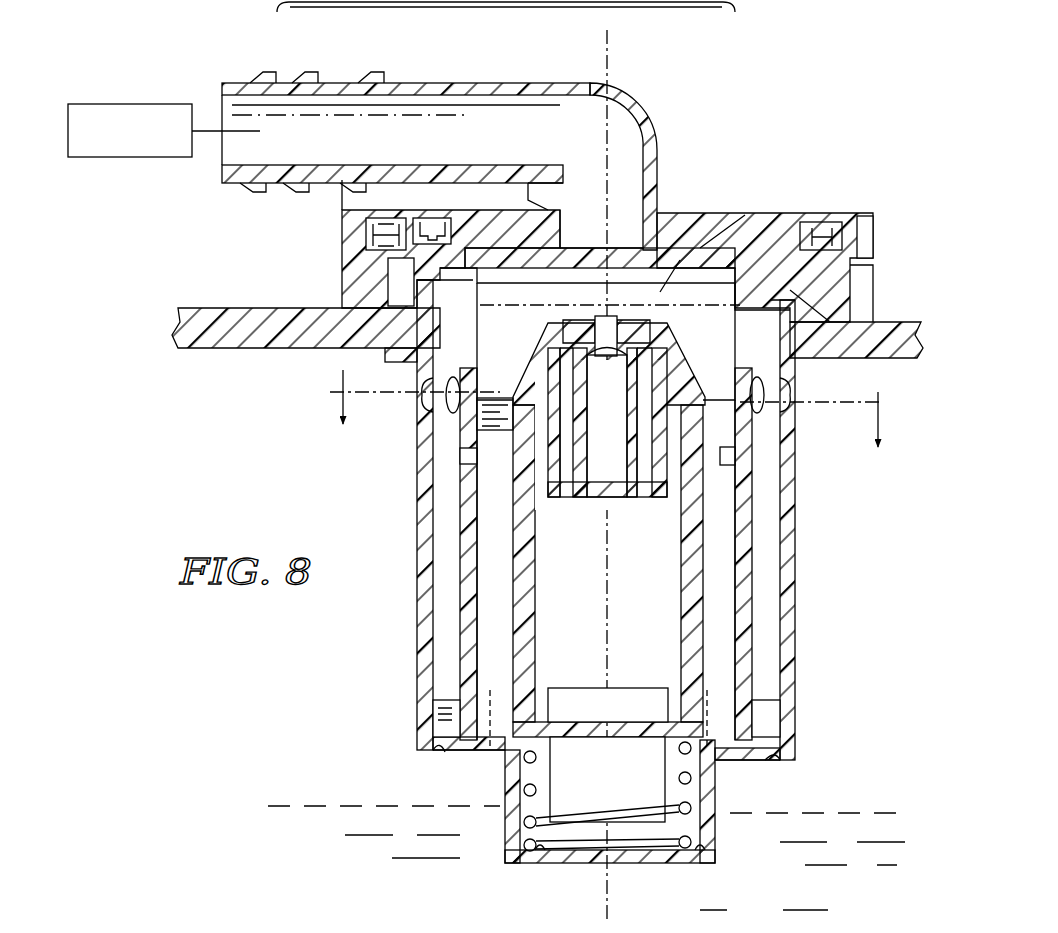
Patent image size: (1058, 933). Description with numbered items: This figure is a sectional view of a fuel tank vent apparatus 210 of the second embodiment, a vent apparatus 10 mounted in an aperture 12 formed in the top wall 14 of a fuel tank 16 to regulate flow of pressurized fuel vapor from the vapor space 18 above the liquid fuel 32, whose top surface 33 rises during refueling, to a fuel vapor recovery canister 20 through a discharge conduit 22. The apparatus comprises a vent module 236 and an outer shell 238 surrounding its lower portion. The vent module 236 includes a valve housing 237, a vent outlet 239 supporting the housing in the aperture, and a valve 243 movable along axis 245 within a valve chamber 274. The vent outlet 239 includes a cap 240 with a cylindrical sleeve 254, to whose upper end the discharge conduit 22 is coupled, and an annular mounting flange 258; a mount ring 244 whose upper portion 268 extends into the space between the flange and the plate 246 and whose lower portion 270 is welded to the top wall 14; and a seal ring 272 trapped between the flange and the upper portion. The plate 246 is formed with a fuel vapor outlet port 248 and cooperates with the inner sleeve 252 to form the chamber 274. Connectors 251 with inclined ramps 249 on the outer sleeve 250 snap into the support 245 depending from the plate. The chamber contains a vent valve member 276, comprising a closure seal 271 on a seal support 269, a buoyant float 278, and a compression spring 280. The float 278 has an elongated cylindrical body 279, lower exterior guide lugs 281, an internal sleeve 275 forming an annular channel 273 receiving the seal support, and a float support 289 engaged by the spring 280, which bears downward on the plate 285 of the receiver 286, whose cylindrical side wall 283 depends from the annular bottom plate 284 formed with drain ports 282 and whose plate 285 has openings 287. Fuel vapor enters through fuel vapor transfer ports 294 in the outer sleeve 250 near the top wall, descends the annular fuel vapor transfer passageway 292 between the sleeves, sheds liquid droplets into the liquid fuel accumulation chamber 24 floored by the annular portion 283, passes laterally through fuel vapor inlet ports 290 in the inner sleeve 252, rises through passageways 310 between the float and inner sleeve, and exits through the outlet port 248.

The fuel tank vent apparatus 10 is at (600, 414).
The aperture 12 is at (396, 352).
The top wall 14 is at (240, 318).
The fuel tank 16 is at (200, 308).
The vapor space 18 is at (897, 330).
The fuel vapor recovery canister 20 is at (128, 104).
The discharge conduit 22 is at (232, 88).
The liquid fuel accumulation chamber 24 is at (445, 728).
The liquid fuel 32 is at (610, 872).
The top surface 33 is at (330, 805).
The vent apparatus 210 is at (348, 641).
The vent module 236 is at (664, 156).
The valve housing 237 is at (745, 215).
The outer shell 238 is at (806, 516).
The vent outlet 239 is at (313, 211).
The cap 240 is at (674, 110).
The valve 243 is at (660, 292).
The mount ring 244 is at (336, 296).
The support 245 is at (609, 46).
The plate 246 is at (577, 242).
The fuel vapor outlet port 248 is at (628, 232).
The inclined ramp 249 is at (455, 276).
The outer sleeve 250 is at (792, 596).
The connector 251 is at (757, 310).
The inner sleeve 252 is at (745, 535).
The cylindrical sleeve 254 is at (548, 190).
The annular mounting flange 258 is at (787, 212).
The upper portion 268 is at (868, 262).
The seal support 269 is at (565, 416).
The lower portion 270 is at (865, 302).
The closure seal 271 is at (592, 310).
The seal ring 272 is at (828, 237).
The annular channel 273 is at (643, 483).
The valve chamber 274 is at (699, 262).
The internal sleeve 275 is at (567, 506).
The vent valve member 276 is at (524, 370).
The buoyant float 278 is at (714, 634).
The elongated cylindrical body 279 is at (530, 594).
The compression spring 280 is at (720, 410).
The exterior guide lugs 281 is at (490, 690).
The drain port 282 is at (445, 753).
The cylindrical side wall 283 is at (508, 795).
The annular bottom plate 284 is at (500, 749).
The plate 285 is at (640, 863).
The receiver 286 is at (729, 840).
The openings 287 is at (545, 868).
The float support 289 is at (572, 684).
The fuel vapor inlet port 290 is at (455, 482).
The fuel vapor transfer passageway 292 is at (478, 434).
The fuel vapor transfer port 294 is at (460, 398).
The passageways 310 is at (705, 556).